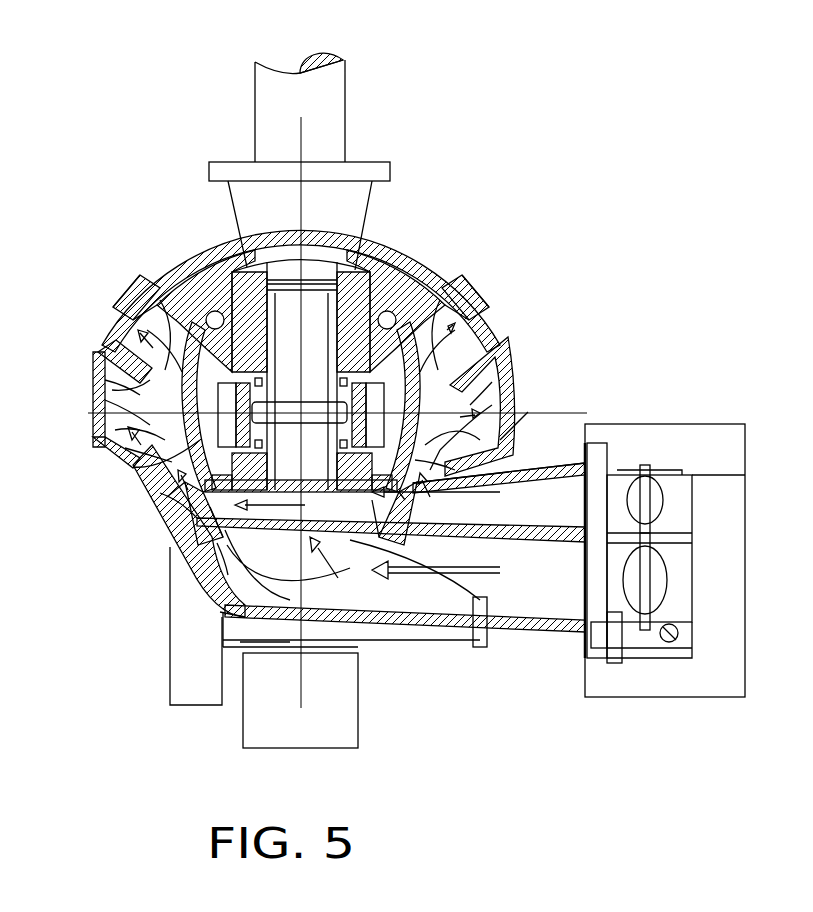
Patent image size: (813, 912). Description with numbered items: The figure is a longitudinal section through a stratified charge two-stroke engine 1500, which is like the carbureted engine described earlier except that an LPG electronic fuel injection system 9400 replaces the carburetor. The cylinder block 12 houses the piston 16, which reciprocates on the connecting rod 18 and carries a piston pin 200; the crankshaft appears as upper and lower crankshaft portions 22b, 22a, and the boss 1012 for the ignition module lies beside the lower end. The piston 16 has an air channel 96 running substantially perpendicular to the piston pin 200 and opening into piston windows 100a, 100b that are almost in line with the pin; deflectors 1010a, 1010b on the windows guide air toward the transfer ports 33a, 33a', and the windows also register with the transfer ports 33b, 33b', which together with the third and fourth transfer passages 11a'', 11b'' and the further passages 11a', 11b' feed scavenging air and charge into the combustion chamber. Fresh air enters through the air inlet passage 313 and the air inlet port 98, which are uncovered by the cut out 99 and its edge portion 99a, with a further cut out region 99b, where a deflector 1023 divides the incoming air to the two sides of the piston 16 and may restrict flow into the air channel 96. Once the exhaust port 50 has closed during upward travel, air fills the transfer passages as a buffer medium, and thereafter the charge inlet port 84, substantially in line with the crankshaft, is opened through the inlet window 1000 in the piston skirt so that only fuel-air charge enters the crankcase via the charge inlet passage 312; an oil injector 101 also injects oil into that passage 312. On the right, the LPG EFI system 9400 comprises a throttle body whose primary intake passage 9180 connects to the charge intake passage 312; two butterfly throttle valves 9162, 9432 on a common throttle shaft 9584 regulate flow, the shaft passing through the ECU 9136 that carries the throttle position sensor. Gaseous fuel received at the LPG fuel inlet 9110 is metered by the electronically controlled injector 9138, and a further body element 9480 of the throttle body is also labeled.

The engine 1500 is at (536, 250).
The upper shaft 22b is at (315, 118).
The lower shaft 22a is at (263, 708).
The exhaust port 50 is at (300, 260).
The cylinder block 12 is at (378, 258).
The piston 16 is at (403, 272).
The piston pin 200 is at (207, 273).
The transfer port 33b is at (450, 285).
The transfer port 33b' is at (149, 284).
The fourth transfer passage 11b'' is at (110, 296).
The third transfer passage 11a'' is at (485, 296).
The deflector 1010a is at (505, 340).
The deflector 1010b is at (110, 348).
The left lower passage 11b' is at (83, 379).
The piston window 100b is at (113, 393).
The right lower passage 11a' is at (515, 386).
The piston window 100a is at (528, 412).
The transfer port 33a is at (499, 448).
The transfer port 33a' is at (148, 531).
The connecting rod 18 is at (160, 493).
The cut out 99 is at (167, 497).
The left channel wall 99b is at (210, 507).
The cut out 99a is at (372, 500).
The air channel 96 is at (217, 543).
The inlet window 1000 is at (220, 612).
The charge inlet port 84 is at (222, 625).
The boss 1012 is at (230, 677).
The deflector 1023 is at (405, 500).
The oil injector 101 is at (480, 650).
The charge inlet passage 312 is at (600, 585).
The air inlet passage 313 is at (597, 497).
The primary intake passage 9180 is at (608, 611).
The LPG injector 9138 is at (613, 663).
The valve body 9480 is at (665, 472).
The electronic control unit 9136 is at (657, 498).
The throttle valve 9432 is at (708, 508).
The LPG electronic fuel injection system 9400 is at (718, 507).
The throttle shaft 9584 is at (642, 540).
The air inlet port 98 is at (587, 553).
The throttle valve 9162 is at (662, 593).
The LPG fuel inlet 9110 is at (672, 638).